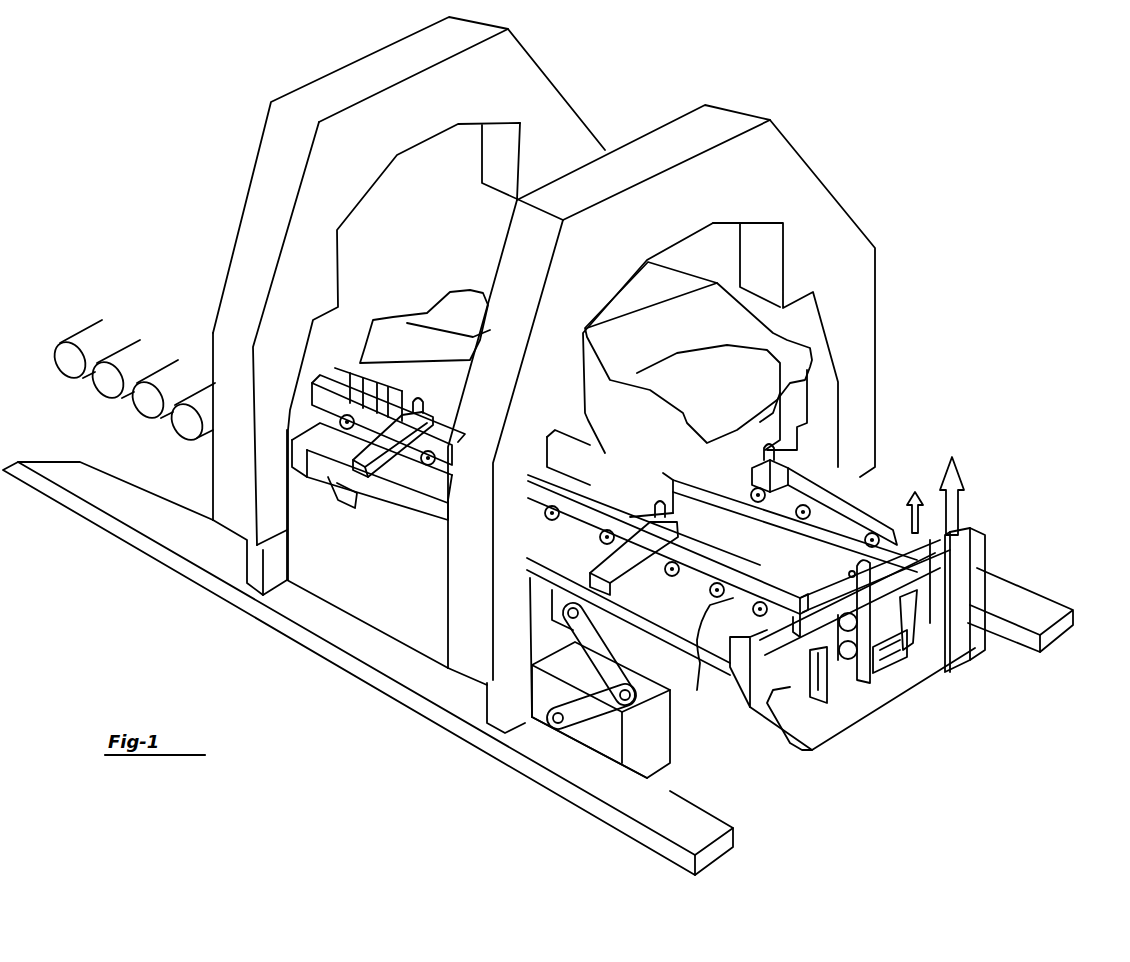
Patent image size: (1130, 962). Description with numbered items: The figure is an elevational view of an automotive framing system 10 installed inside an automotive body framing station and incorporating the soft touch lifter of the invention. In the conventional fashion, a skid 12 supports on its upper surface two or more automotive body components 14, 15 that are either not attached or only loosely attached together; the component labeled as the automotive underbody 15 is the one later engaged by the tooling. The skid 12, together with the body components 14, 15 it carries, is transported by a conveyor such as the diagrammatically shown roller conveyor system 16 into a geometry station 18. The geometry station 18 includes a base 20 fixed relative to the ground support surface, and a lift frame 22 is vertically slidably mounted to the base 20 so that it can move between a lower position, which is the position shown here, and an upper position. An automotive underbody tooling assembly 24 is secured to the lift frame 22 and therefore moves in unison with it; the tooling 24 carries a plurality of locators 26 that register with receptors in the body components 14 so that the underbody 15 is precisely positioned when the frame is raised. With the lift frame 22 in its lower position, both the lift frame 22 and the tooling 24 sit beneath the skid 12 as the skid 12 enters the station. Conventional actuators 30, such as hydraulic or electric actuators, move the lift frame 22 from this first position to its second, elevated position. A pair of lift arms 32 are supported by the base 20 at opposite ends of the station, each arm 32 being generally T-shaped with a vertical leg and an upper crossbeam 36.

The automotive framing system 10 is at (1007, 290).
The skid 12 is at (875, 513).
The automotive body components 14 is at (813, 303).
The automotive underbody 15 is at (838, 381).
The roller conveyor system 16 is at (118, 335).
The geometry station 18 is at (640, 95).
The base 20 is at (570, 763).
The lift frame 22 is at (863, 703).
The automotive underbody tooling assembly 24 is at (413, 437).
The locators 26 is at (662, 520).
The actuators 30 is at (647, 742).
The lift arms 32 is at (990, 557).
The upper crossbeam 36 is at (800, 740).